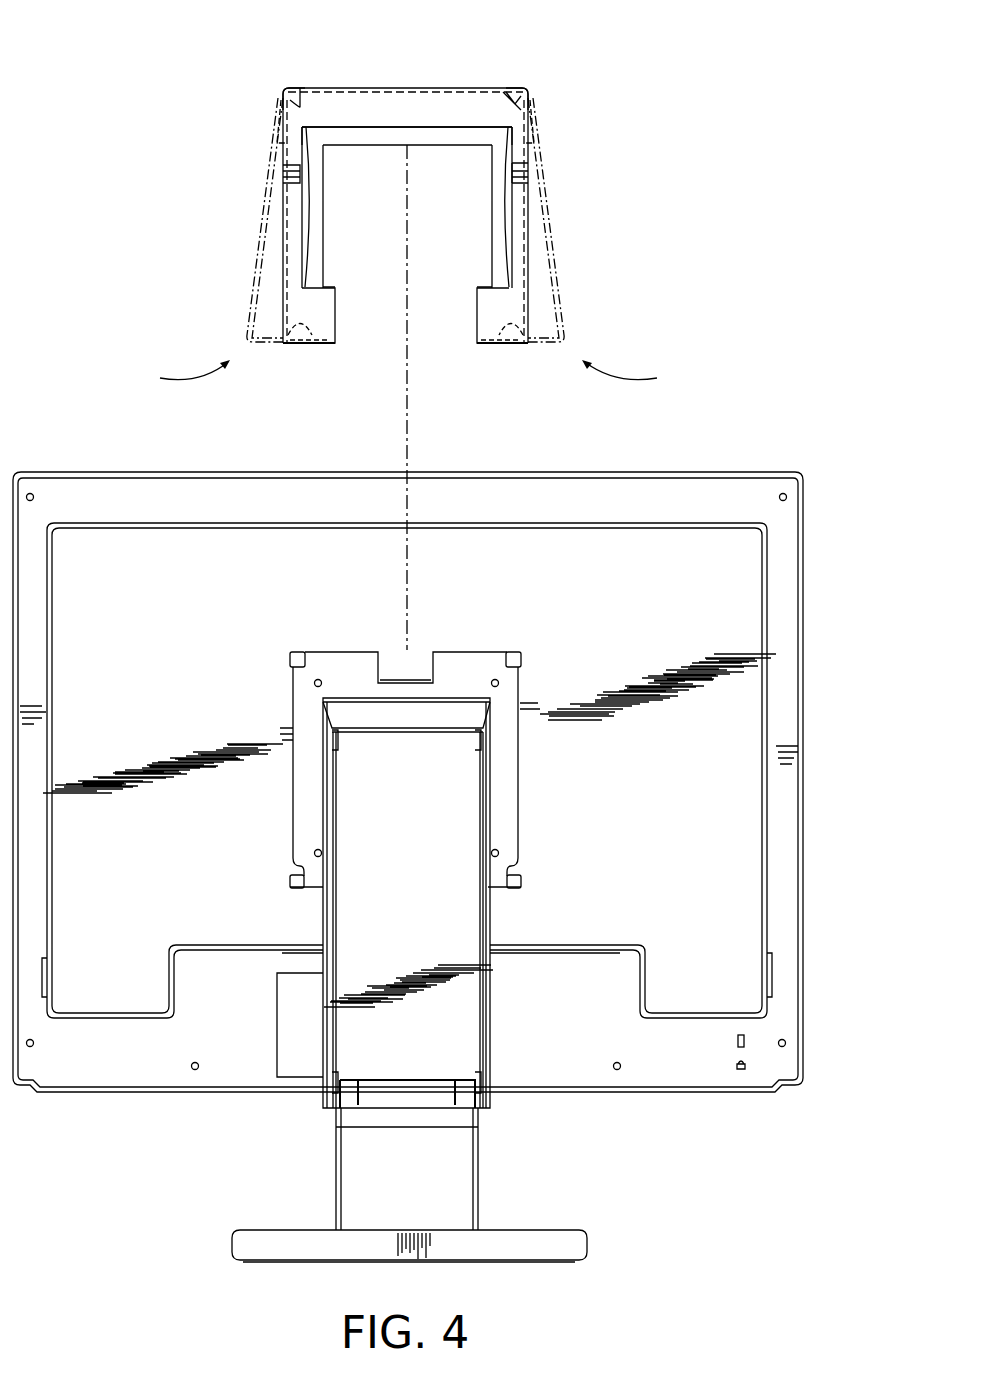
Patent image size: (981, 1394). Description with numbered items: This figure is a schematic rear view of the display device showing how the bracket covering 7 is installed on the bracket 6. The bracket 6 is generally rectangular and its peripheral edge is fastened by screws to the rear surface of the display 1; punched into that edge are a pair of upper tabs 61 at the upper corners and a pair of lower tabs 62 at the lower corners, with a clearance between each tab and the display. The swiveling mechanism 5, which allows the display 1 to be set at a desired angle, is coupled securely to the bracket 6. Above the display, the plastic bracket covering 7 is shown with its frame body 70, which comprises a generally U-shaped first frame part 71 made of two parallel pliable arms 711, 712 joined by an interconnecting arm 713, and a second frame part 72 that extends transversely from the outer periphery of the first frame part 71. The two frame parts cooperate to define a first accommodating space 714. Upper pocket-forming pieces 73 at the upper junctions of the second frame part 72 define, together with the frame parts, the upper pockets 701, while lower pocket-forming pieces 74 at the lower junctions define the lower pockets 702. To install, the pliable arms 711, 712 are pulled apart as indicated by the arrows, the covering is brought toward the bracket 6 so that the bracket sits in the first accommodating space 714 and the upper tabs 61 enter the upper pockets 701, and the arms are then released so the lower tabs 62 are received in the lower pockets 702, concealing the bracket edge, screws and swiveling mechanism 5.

The display 1 is at (793, 465).
The swiveling mechanism 5 is at (350, 717).
The bracket 6 is at (512, 795).
The upper tabs 61 is at (520, 653).
The lower tabs 62 is at (523, 882).
The bracket covering 7 is at (560, 172).
The frame body 70 is at (413, 82).
The upper pockets 701 is at (533, 102).
The lower pockets 702 is at (516, 347).
The first frame part 71 is at (250, 172).
The pliable arm 711 is at (295, 225).
The pliable arm 712 is at (517, 227).
The interconnecting arm 713 is at (438, 108).
The first accommodating space 714 is at (435, 332).
The second frame part 72 is at (538, 137).
The upper pocket-forming pieces 73 is at (523, 86).
The lower pocket-forming pieces 74 is at (518, 328).